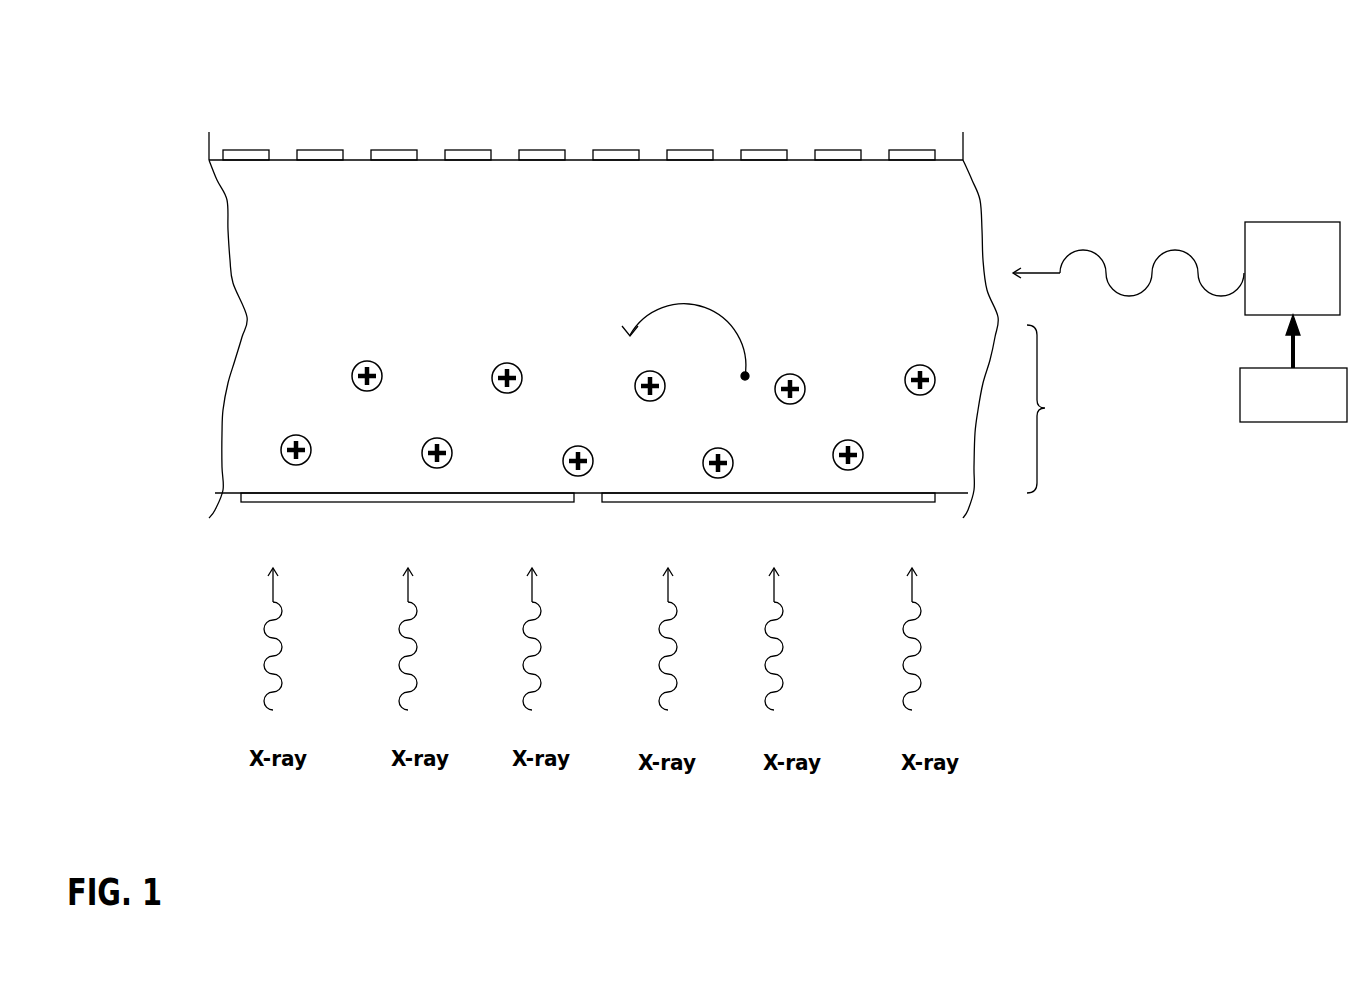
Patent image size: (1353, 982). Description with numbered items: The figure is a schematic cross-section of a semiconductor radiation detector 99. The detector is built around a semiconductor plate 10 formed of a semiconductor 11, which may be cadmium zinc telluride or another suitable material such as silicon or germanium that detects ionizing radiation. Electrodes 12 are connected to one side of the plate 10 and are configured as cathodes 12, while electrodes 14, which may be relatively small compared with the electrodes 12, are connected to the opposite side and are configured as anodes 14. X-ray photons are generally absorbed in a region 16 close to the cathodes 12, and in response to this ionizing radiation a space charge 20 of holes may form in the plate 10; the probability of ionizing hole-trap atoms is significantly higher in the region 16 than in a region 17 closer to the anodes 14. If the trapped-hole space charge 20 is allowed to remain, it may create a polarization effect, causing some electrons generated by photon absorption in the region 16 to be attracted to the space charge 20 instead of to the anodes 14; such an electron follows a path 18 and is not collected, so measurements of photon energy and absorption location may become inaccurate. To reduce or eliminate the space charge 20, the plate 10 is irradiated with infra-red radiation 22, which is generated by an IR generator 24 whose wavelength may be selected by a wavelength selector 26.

The semiconductor plate 10 is at (260, 196).
The semiconductor 11 is at (943, 196).
The electrodes (cathodes) 12 is at (295, 505).
The electrodes (anodes) 14 is at (246, 148).
The region close to cathodes 16 is at (190, 418).
The region closer to anodes 17 is at (190, 233).
The electron path 18 is at (685, 295).
The space charge 20 is at (1053, 409).
The infra-red radiation 22 is at (1101, 252).
The IR generator 24 is at (1270, 220).
The wavelength selector 26 is at (1238, 397).
The semiconductor radiation detector 99 is at (1090, 584).